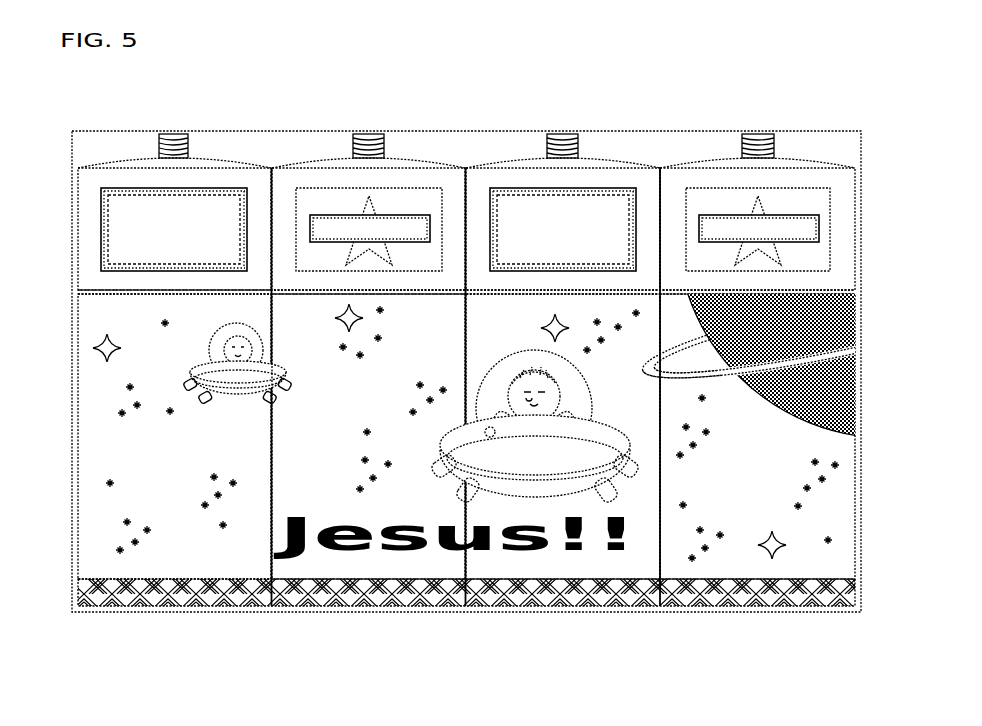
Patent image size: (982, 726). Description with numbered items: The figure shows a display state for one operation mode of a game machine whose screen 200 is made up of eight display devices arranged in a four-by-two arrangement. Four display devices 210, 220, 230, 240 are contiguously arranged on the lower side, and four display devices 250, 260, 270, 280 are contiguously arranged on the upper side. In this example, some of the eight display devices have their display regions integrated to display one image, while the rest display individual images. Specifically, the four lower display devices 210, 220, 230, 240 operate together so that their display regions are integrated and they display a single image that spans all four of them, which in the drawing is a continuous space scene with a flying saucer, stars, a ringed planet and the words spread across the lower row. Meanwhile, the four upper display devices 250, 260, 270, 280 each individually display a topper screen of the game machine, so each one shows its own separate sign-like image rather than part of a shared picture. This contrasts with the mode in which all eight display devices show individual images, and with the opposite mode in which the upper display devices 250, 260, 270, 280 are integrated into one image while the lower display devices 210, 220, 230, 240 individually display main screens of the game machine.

The display apparatus 200 is at (516, 110).
The display device 210 is at (188, 608).
The display device 220 is at (378, 608).
The display device 230 is at (594, 608).
The display device 240 is at (783, 608).
The display device 250 is at (229, 166).
The display device 260 is at (418, 166).
The display device 270 is at (638, 166).
The display device 280 is at (822, 164).